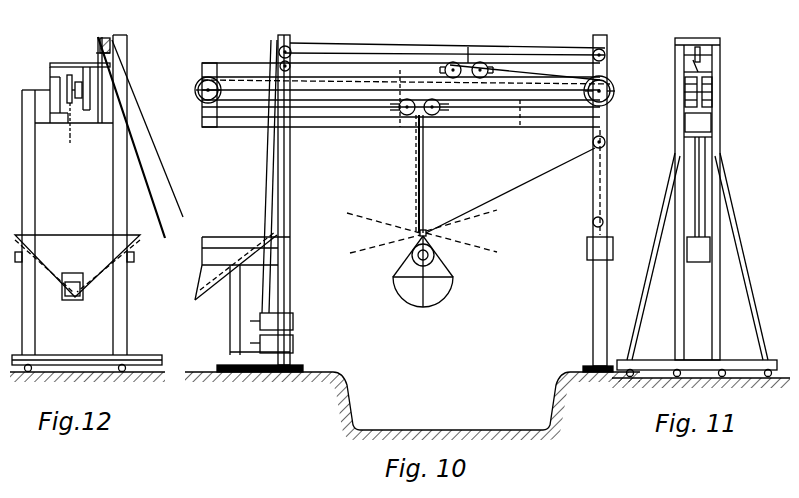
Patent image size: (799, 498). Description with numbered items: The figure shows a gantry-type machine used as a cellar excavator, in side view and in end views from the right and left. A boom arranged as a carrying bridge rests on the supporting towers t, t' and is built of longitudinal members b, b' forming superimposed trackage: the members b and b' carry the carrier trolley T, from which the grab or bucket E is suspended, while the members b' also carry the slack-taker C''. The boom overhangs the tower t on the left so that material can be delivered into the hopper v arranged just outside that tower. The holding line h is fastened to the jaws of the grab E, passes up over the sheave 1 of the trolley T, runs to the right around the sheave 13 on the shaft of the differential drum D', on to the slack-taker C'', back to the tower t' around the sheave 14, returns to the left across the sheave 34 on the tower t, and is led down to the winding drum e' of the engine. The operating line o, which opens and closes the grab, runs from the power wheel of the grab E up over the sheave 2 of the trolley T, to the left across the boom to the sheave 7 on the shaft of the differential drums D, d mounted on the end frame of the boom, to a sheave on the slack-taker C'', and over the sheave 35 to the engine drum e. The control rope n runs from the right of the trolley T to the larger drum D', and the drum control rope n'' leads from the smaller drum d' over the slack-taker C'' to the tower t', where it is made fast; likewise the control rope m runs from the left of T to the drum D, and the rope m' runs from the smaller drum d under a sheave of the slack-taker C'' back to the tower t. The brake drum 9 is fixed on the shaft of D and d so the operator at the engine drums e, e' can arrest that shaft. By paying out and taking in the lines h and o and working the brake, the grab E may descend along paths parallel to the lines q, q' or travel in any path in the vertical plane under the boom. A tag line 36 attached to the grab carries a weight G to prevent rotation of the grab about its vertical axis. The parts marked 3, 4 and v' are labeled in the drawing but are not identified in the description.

In FIG. 10, the sheave 1 is at (438, 115).
In FIG. 10, the sheave 2 is at (404, 116).
In FIG. 10, the pulley 3 is at (482, 63).
In FIG. 10, the pulley 4 is at (450, 63).
In FIG. 12, the sheave 7 is at (76, 123).
In FIG. 10, the sheave 7 is at (196, 88).
In FIG. 12, the brake drum 9 is at (69, 147).
In FIG. 10, the brake drum 9 is at (196, 94).
In FIG. 10, the sheave 13 is at (610, 97).
In FIG. 11, the sheave 13 is at (694, 50).
In FIG. 10, the sheave 14 is at (605, 55).
In FIG. 11, the sheave 14 is at (700, 50).
In FIG. 12, the sheave 34 is at (100, 42).
In FIG. 10, the sheave 34 is at (280, 48).
In FIG. 12, the sheave 35 is at (100, 56).
In FIG. 10, the sheave 35 is at (291, 66).
In FIG. 10, the tag line 36 is at (515, 184).
In FIG. 12, the longitudinal member b is at (78, 91).
In FIG. 11, the longitudinal member b is at (699, 125).
In FIG. 12, the longitudinal member b' is at (65, 93).
In FIG. 10, the longitudinal member b' is at (249, 101).
In FIG. 11, the longitudinal member b' is at (701, 67).
In FIG. 12, the differential drum d is at (53, 69).
In FIG. 10, the differential drum d is at (406, 73).
In FIG. 11, the differential drum d' is at (684, 92).
In FIG. 12, the differential drum D is at (67, 73).
In FIG. 10, the differential drum D is at (407, 109).
In FIG. 11, the differential drum D' is at (723, 92).
In FIG. 10, the winding drum e is at (282, 344).
In FIG. 10, the winding drum e' is at (284, 185).
In FIG. 10, the grab E is at (423, 268).
In FIG. 10, the weight G is at (587, 251).
In FIG. 11, the weight G is at (698, 199).
In FIG. 12, the holding line h is at (175, 190).
In FIG. 10, the holding line h is at (424, 195).
In FIG. 10, the carrier trolley control rope m is at (330, 128).
In FIG. 10, the drum control rope m' is at (393, 53).
In FIG. 10, the control rope n is at (517, 136).
In FIG. 10, the drum control rope n'' is at (526, 71).
In FIG. 12, the operating line o is at (152, 208).
In FIG. 10, the operating line o is at (416, 194).
In FIG. 10, the path line q is at (422, 231).
In FIG. 10, the path line q' is at (422, 230).
In FIG. 12, the supporting tower t is at (74, 195).
In FIG. 10, the supporting tower t is at (292, 200).
In FIG. 10, the supporting tower t' is at (589, 200).
In FIG. 11, the supporting tower t' is at (697, 199).
In FIG. 10, the carrier trolley T is at (420, 116).
In FIG. 10, the slack-taker C'' is at (465, 43).
In FIG. 12, the hopper v is at (77, 267).
In FIG. 10, the bracket v' is at (242, 285).